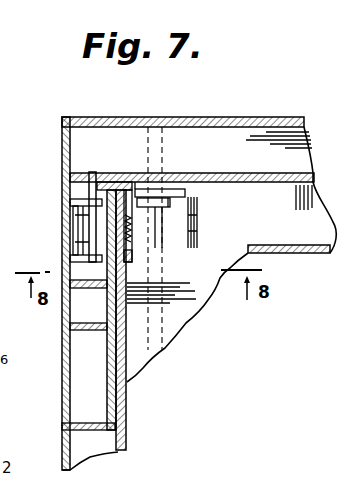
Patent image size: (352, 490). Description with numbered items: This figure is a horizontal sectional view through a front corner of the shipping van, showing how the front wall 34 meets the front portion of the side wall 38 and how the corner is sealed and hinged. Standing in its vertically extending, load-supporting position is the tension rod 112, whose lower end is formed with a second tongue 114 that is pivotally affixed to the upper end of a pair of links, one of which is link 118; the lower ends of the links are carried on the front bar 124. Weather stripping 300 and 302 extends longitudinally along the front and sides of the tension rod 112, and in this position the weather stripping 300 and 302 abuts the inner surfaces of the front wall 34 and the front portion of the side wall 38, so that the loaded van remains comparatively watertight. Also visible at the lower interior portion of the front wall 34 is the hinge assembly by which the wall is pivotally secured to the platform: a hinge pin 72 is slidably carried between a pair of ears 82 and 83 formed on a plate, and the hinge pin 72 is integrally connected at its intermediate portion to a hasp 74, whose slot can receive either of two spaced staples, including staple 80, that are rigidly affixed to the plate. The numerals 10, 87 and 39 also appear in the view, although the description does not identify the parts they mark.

The side wall 38 is at (233, 113).
The weather stripping 302 is at (178, 180).
The front wall 34 is at (130, 397).
The hinge pin 72 is at (89, 172).
The ear 82 is at (70, 201).
The hasp 74 is at (76, 214).
The staple 80 is at (82, 238).
The ear 83 is at (70, 262).
The tension rod 112 is at (188, 192).
The second tongue 114 is at (176, 203).
The weather stripping 300 is at (157, 238).
The link 118 is at (198, 213).
The bar 124 is at (205, 241).
The assembly 10 is at (100, 237).
The member 87 is at (1, 311).
The member 39 is at (10, 345).